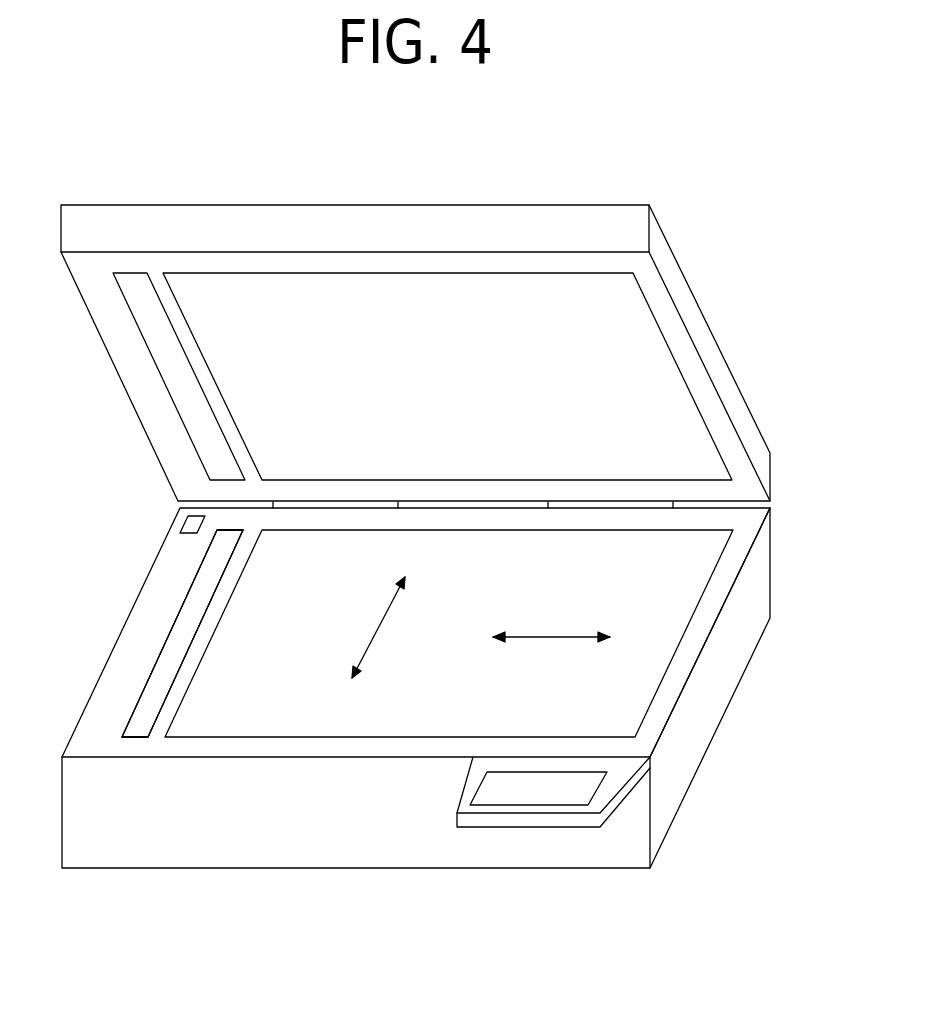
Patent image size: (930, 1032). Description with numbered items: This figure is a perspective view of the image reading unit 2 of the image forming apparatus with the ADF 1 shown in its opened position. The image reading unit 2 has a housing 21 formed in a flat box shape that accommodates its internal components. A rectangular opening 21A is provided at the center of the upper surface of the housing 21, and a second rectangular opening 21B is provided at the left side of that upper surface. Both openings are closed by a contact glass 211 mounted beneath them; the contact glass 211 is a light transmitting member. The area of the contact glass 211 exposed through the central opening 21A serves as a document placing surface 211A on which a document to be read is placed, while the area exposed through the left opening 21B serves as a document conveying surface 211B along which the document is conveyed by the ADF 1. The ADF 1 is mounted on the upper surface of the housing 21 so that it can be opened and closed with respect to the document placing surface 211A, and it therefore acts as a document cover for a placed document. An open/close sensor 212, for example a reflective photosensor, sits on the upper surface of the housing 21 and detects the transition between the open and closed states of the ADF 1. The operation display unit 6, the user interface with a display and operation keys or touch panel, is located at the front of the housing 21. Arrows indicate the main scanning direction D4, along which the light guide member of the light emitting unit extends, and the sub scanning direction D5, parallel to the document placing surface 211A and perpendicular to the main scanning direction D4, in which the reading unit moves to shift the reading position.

The ADF 1 is at (728, 343).
The image reading unit 2 is at (742, 723).
The housing 21 is at (730, 655).
The rectangular opening 21A is at (255, 743).
The rectangular opening 21B is at (126, 747).
The contact glass 211 is at (233, 657).
The document placing surface 211A is at (223, 693).
The document conveying surface 211B is at (207, 578).
The open/close sensor 212 is at (185, 522).
The operation display unit 6 is at (458, 781).
The main scanning direction D4 is at (380, 630).
The sub scanning direction D5 is at (548, 641).